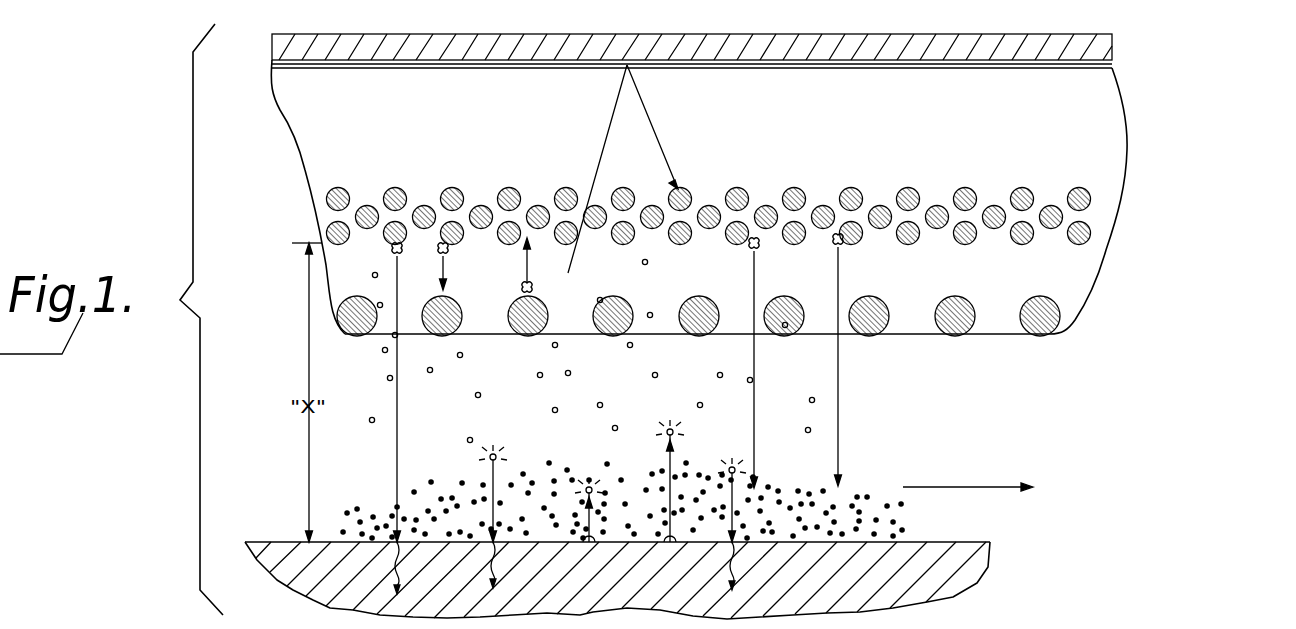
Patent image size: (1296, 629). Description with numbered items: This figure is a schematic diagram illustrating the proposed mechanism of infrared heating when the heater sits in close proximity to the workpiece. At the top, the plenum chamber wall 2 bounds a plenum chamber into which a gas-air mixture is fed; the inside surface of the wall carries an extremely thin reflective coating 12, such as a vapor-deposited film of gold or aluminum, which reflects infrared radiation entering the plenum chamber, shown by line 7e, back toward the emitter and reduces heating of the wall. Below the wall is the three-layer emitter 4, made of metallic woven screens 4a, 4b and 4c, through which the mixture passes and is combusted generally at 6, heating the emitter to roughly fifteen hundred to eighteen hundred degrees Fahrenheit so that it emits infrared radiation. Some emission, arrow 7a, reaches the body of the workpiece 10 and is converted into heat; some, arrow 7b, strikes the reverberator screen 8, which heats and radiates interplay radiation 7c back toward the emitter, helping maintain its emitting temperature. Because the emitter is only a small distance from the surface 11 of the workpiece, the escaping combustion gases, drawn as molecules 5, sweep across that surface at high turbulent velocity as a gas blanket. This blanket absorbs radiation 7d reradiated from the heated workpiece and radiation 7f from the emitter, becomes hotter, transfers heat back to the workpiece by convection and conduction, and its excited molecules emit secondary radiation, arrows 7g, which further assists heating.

The plenum chamber wall 2 is at (1097, 57).
The reflective coating 12 is at (882, 70).
The emitter 4 is at (322, 237).
The metallic woven screen 4a is at (1090, 200).
The metallic woven screen 4b is at (1062, 218).
The metallic woven screen 4c is at (1090, 236).
The combustion region 6 is at (948, 255).
The reverberator screen 8 is at (1065, 316).
The infrared emission arrow 7a is at (399, 406).
The infrared emission arrow 7b is at (446, 267).
The interplay radiation arrow 7c is at (528, 268).
The workpiece radiation arrow 7d is at (593, 504).
The plenum radiation line 7e is at (602, 150).
The heater radiation arrow 7f is at (838, 385).
The secondary radiation arrows 7g is at (496, 500).
The combustion gas molecules 5 is at (860, 502).
The workpiece surface 11 is at (938, 542).
The workpiece 10 is at (958, 578).